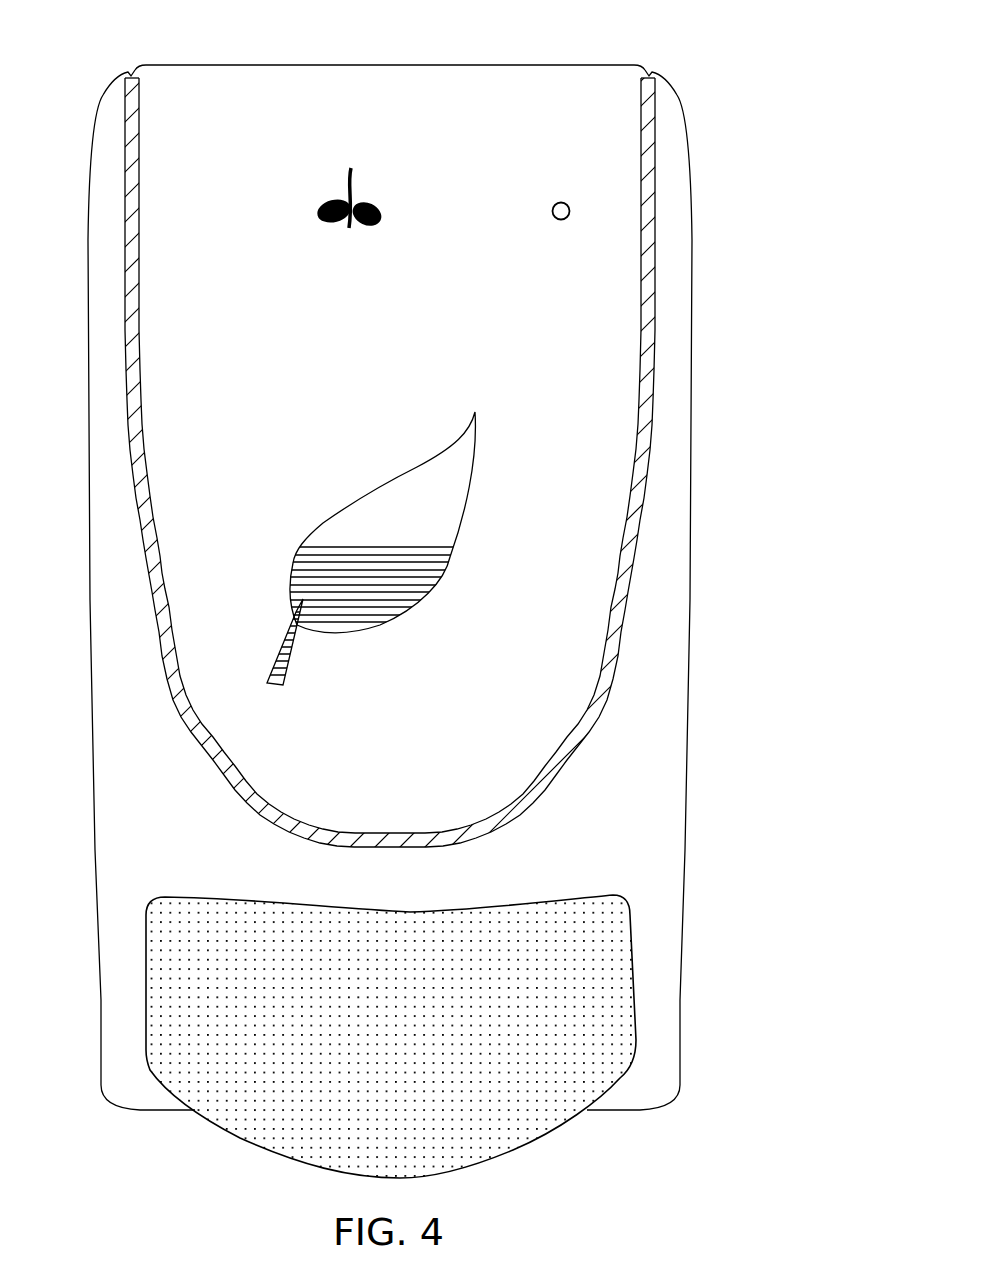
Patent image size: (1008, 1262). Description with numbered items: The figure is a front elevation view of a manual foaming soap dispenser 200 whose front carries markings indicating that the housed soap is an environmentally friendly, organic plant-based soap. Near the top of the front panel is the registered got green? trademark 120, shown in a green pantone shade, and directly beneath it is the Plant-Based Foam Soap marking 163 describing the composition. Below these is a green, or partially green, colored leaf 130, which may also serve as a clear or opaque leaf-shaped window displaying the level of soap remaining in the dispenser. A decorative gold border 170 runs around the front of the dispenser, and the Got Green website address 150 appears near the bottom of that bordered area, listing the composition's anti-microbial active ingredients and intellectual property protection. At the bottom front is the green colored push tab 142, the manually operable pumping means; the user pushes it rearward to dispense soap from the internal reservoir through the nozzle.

The manual foaming soap dispenser 200 is at (728, 148).
The got green? trademark 120 is at (550, 258).
The Plant-Based Foam Soap marking 163 is at (543, 345).
The leaf 130 is at (453, 540).
The gold border 170 is at (607, 698).
The Got Green website address 150 is at (513, 760).
The push tab 142 is at (617, 988).